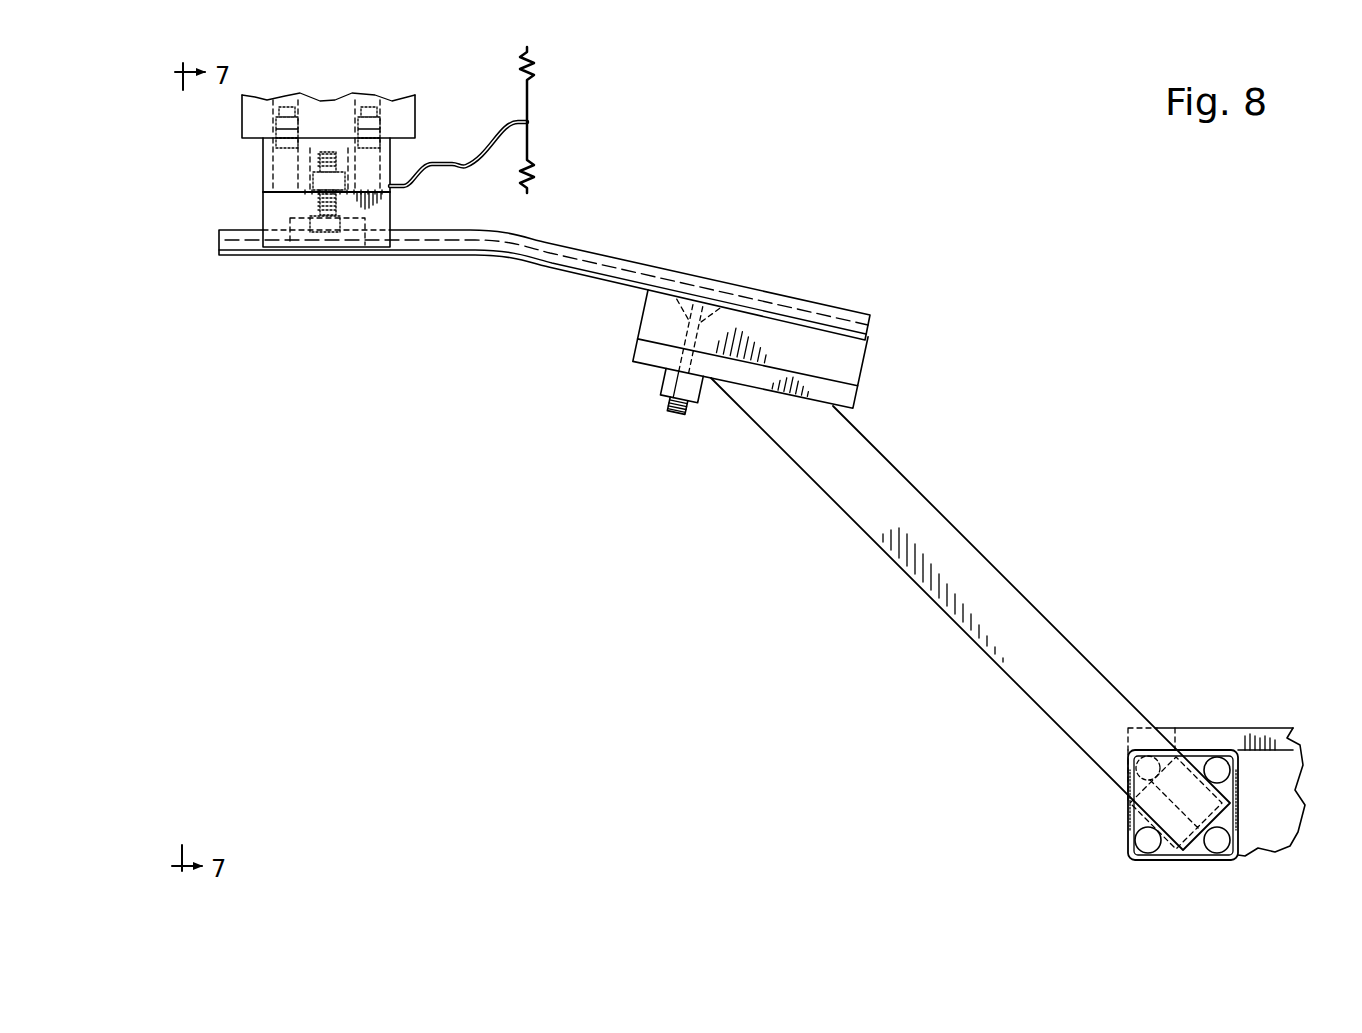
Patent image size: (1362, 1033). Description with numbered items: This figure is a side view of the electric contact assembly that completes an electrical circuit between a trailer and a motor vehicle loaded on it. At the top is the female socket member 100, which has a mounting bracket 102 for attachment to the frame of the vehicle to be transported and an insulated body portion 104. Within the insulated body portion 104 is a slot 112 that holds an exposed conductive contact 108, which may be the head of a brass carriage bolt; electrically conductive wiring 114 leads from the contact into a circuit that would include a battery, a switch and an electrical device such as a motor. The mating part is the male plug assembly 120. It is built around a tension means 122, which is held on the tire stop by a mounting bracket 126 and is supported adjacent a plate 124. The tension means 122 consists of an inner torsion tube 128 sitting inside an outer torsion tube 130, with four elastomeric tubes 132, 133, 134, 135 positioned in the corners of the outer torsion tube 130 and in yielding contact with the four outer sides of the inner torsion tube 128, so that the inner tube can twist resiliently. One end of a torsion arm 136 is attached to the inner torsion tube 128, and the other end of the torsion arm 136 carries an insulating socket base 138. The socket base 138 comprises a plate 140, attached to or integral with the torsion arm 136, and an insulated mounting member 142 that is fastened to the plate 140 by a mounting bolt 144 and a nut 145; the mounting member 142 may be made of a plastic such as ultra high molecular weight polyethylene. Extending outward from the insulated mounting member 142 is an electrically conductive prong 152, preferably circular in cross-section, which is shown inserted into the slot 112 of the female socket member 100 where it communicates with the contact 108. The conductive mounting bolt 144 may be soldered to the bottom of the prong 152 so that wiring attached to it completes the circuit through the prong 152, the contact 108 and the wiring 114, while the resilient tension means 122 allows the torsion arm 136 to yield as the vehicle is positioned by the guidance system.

The female socket member 100 is at (194, 154).
The mounting bracket 102 is at (397, 97).
The insulated body portion 104 is at (262, 203).
The exposed conductive contact 108 is at (317, 222).
The slot 112 is at (365, 250).
The electrically conductive wiring 114 is at (462, 168).
The male plug assembly 120 is at (584, 694).
The tension means 122 is at (1046, 794).
The support plate 124 is at (1285, 778).
The mounting bracket 126 is at (1215, 728).
The inner torsion tube 128 is at (1130, 800).
The outer torsion tube 130 is at (1157, 860).
The elastomeric tube 132 is at (1147, 846).
The elastomeric tube 133 is at (1218, 846).
The elastomeric tube 134 is at (1219, 770).
The elastomeric tube 135 is at (1152, 760).
The torsion arm 136 is at (960, 607).
The insulating socket base 138 is at (719, 470).
The plate 140 is at (853, 400).
The insulated mounting member 142 is at (866, 355).
The mounting bolt 144 is at (676, 412).
The nut 145 is at (662, 378).
The electrically conductive prong 152 is at (638, 262).